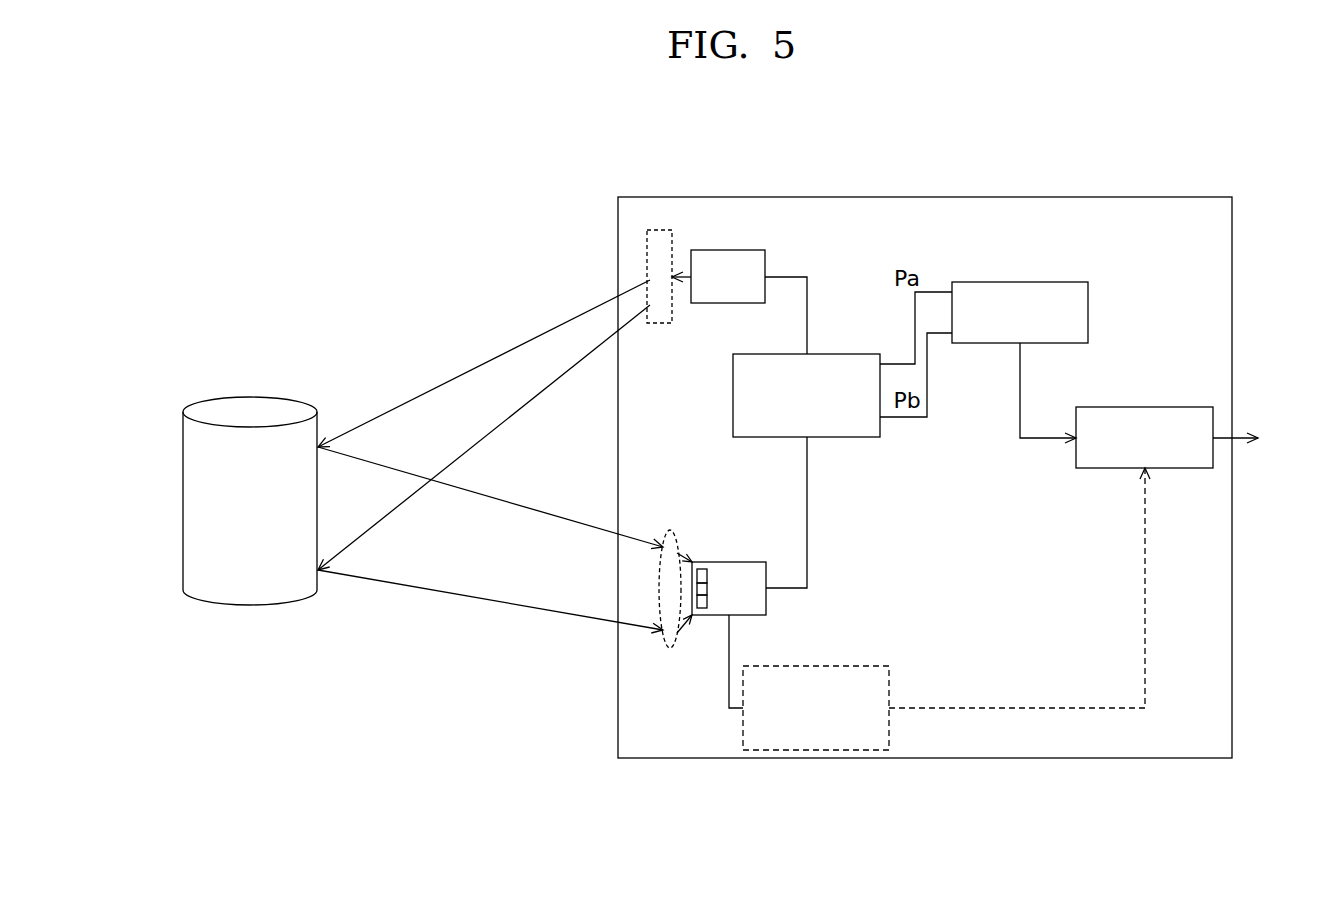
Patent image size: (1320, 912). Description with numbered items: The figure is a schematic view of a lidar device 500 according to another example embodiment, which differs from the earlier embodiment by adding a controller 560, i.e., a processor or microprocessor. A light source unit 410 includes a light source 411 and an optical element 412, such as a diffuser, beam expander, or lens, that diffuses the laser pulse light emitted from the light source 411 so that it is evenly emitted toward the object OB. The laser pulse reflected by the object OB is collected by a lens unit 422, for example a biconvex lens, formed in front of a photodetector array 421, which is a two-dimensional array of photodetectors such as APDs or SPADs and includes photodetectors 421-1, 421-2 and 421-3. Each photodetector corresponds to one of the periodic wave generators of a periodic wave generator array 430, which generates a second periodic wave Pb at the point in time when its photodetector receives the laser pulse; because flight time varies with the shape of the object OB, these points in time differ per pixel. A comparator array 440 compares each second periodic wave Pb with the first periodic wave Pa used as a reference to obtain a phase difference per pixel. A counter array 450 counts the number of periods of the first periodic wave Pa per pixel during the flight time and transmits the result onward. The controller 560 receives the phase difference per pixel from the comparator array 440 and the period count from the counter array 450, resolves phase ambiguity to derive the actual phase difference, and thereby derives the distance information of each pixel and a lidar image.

The lidar device 500 is at (1238, 165).
The object OB is at (285, 400).
The light source unit 410 is at (648, 148).
The light source 411 is at (728, 250).
The optical element 412 is at (660, 230).
The photodetector array 421 is at (790, 567).
The photodetector 421-1 is at (707, 577).
The photodetector 421-2 is at (707, 588).
The photodetector 421-3 is at (707, 600).
The lens unit 422 is at (670, 648).
The periodic wave generator array 430 is at (733, 395).
The comparator array 440 is at (1020, 282).
The counter array 450 is at (889, 682).
The controller 560 is at (1145, 407).